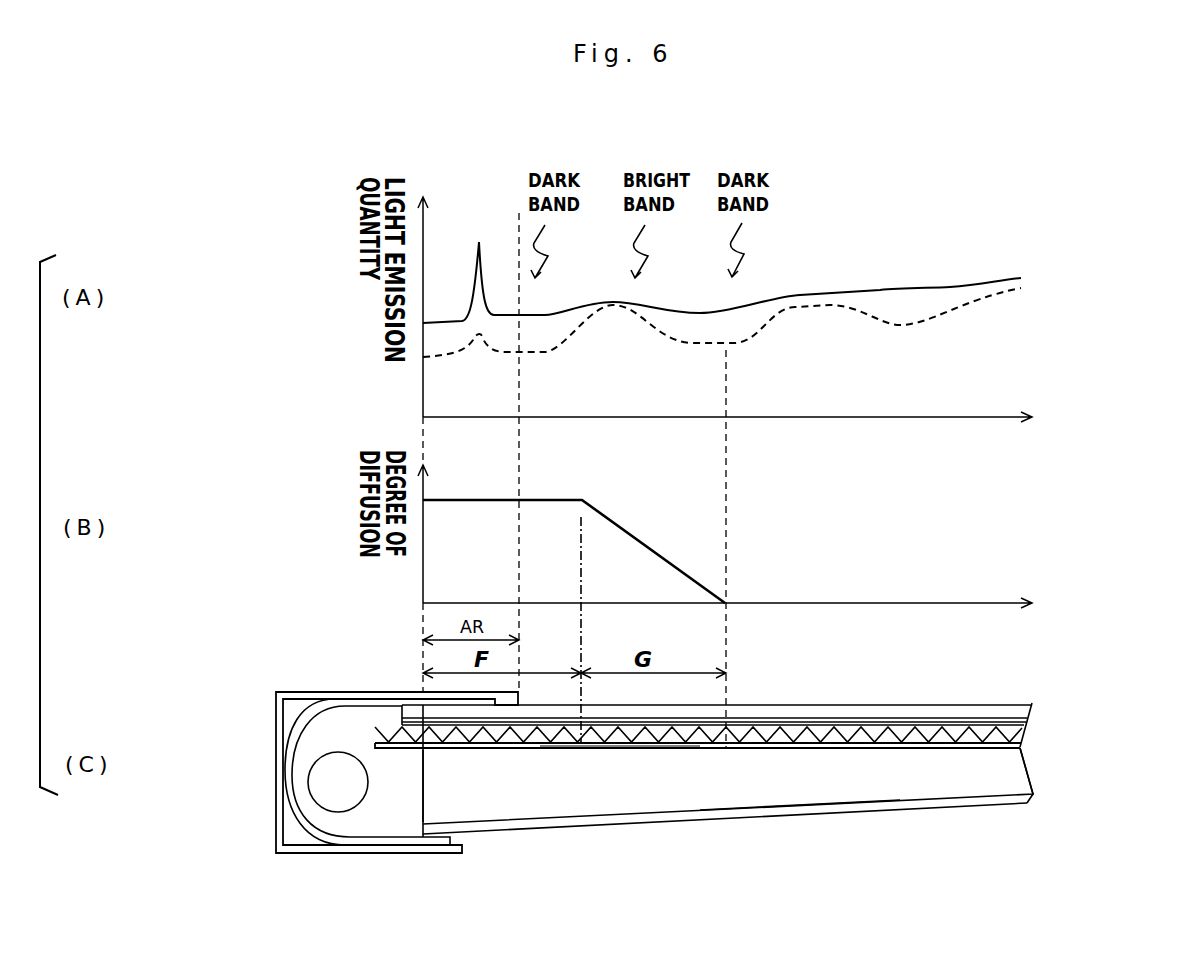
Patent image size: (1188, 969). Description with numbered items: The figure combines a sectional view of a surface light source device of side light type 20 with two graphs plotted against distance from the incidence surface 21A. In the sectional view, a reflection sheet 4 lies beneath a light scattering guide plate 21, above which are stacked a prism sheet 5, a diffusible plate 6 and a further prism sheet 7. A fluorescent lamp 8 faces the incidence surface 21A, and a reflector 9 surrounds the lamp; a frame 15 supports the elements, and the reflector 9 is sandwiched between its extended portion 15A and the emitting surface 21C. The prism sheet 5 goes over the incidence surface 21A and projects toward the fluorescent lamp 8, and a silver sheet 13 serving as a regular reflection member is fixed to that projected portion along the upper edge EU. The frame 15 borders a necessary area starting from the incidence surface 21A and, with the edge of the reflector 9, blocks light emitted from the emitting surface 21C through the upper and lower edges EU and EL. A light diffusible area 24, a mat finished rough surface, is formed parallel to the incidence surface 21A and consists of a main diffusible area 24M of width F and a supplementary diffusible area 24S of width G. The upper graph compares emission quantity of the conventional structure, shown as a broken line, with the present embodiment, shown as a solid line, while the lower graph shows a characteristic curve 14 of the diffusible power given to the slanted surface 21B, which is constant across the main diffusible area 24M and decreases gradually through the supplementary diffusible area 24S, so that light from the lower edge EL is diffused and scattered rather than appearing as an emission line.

The reflection sheet 4 is at (967, 800).
The prism sheet 5 is at (1018, 747).
The diffusible plate 6 is at (1024, 719).
The prism sheet 7 is at (1007, 712).
The fluorescent lamp 8 is at (340, 795).
The reflector 9 is at (397, 838).
The silver sheet 13 is at (395, 748).
The degree of diffusion curve 14 is at (640, 538).
The frame 15 is at (276, 830).
The extended portion 15A is at (482, 692).
The surface light source device of side light type 20 is at (680, 838).
The light scattering guide plate 21 is at (965, 769).
The incidence surface 21A is at (424, 815).
The slanted surface 21B is at (812, 806).
The emitting surface 21C is at (950, 746).
The light diffusible area 24 is at (657, 881).
The main diffusible area 24M is at (547, 748).
The supplementary diffusible area 24S is at (617, 748).
The upper edge EU is at (424, 749).
The lower edge EL is at (424, 823).